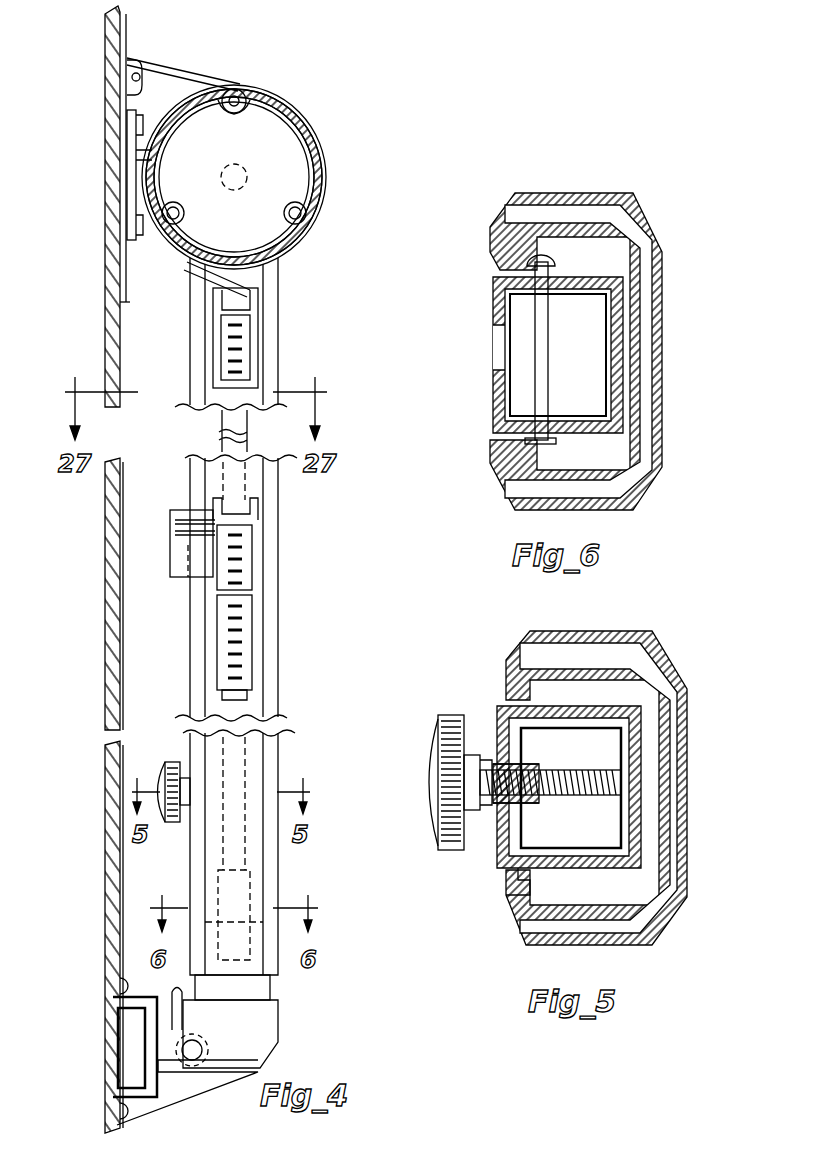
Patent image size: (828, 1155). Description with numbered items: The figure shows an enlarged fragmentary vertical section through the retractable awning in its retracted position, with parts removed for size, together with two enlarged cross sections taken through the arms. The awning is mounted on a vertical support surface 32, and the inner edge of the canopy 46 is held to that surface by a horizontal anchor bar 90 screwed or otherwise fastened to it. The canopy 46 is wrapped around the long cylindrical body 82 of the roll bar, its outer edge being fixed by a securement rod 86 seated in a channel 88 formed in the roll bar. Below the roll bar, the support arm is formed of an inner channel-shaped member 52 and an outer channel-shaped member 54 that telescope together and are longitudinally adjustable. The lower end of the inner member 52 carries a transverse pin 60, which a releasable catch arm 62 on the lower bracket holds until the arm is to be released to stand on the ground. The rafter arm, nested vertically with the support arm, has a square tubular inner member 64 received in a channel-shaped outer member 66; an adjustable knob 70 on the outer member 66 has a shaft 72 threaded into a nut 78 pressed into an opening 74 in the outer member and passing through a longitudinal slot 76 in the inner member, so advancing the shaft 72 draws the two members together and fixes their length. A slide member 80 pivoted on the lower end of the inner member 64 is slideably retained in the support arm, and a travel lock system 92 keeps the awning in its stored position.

In FIG. 4, the support surface 32 is at (106, 286).
In FIG. 4, the horizontal anchor bar 90 is at (128, 48).
In FIG. 4, the canopy 46 is at (190, 74).
In FIG. 4, the cylindrical body 82 is at (293, 120).
In FIG. 4, the securement rod 86 is at (236, 92).
In FIG. 4, the channel 88 is at (256, 98).
In FIG. 4, the outer channel-shaped member 54 is at (270, 570).
In FIG. 6, the outer channel-shaped member 54 is at (625, 492).
In FIG. 5, the outer channel-shaped member 54 is at (641, 662).
In FIG. 4, the travel lock system 92 is at (168, 490).
In FIG. 4, the adjustable knob 70 is at (168, 765).
In FIG. 5, the adjustable knob 70 is at (440, 826).
In FIG. 4, the inner channel-shaped member 52 is at (255, 1000).
In FIG. 4, the releasable catch arm 62 is at (182, 1022).
In FIG. 4, the transverse pin 60 is at (190, 1062).
In FIG. 6, the slide member 80 is at (492, 438).
In FIG. 5, the slide member 80 is at (520, 882).
In FIG. 5, the inner telescoping member 64 is at (652, 768).
In FIG. 5, the outer telescoping member 66 is at (500, 715).
In FIG. 5, the shaft 72 is at (547, 775).
In FIG. 5, the opening 74 is at (496, 768).
In FIG. 5, the nut 78 is at (498, 780).
In FIG. 5, the longitudinal slot 76 is at (500, 802).